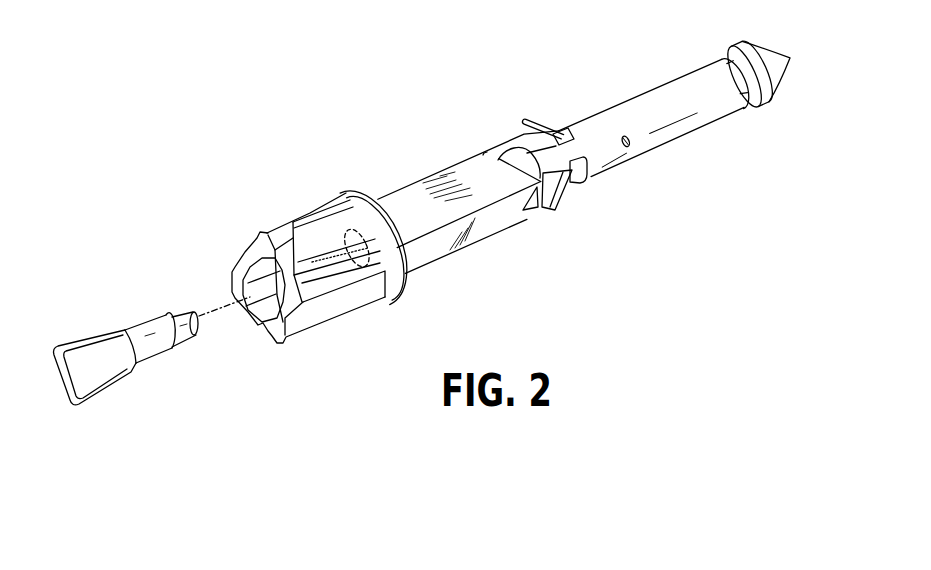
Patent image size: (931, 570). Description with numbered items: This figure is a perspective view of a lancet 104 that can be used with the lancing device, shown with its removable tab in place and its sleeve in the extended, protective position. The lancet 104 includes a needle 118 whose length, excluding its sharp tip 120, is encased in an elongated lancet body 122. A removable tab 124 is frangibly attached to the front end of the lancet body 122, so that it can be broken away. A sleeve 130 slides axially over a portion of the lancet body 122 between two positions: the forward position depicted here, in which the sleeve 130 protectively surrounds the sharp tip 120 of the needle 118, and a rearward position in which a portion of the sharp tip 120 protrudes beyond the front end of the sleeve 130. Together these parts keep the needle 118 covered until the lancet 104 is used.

The lancet 104 is at (480, 184).
The needle 118 is at (630, 146).
The sharp tip 120 is at (327, 256).
The lancet body 122 is at (677, 82).
The removable tab 124 is at (122, 379).
The sleeve 130 is at (398, 300).